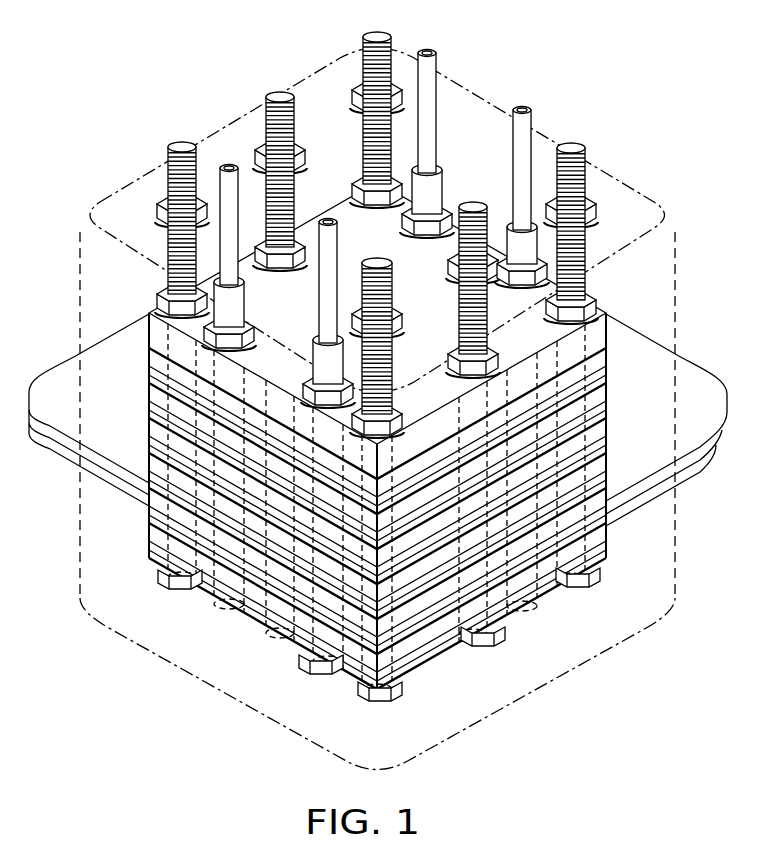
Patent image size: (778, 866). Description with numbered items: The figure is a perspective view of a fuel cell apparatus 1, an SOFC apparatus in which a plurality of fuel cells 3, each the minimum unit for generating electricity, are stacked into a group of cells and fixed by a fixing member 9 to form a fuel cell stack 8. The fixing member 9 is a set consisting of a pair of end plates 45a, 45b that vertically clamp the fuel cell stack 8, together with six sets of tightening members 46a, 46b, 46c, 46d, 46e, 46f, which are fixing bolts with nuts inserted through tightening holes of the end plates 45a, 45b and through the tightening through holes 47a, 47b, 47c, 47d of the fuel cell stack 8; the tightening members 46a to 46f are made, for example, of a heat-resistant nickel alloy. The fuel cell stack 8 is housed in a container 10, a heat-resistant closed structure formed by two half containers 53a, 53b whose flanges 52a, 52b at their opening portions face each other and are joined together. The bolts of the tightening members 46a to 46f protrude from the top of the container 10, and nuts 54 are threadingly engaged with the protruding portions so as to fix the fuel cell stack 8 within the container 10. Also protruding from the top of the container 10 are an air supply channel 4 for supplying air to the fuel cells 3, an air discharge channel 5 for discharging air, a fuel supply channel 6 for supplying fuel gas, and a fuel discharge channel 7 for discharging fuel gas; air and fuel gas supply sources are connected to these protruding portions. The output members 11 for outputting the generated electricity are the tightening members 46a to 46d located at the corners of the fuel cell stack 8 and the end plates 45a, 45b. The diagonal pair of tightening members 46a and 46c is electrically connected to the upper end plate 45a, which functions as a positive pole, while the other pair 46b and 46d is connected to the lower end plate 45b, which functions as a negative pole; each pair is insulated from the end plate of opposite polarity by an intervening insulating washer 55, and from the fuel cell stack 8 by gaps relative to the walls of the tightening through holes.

The fuel cell apparatus 1 is at (576, 68).
The fuel cell 3 is at (158, 371).
The air supply channel 4 is at (436, 58).
The air discharge channel 5 is at (330, 222).
The fuel supply channel 6 is at (534, 114).
The fuel discharge channel 7 is at (230, 168).
The fuel cell stack 8 is at (619, 368).
The fixing member 9 is at (327, 438).
The container 10 is at (97, 538).
The output member 11 is at (314, 96).
The upper end plate 45a is at (157, 336).
The lower end plate 45b is at (524, 600).
The tightening member 46a is at (408, 666).
The tightening member 46b is at (181, 148).
The tightening member 46c is at (376, 40).
The tightening member 46d is at (576, 150).
The tightening member 46e is at (278, 98).
The tightening member 46f is at (473, 206).
The tightening through hole 47a is at (390, 444).
The tightening through hole 47b is at (172, 370).
The tightening through hole 47c is at (435, 123).
The tightening through hole 47d is at (583, 356).
The flange 52a is at (695, 393).
The flange 52b is at (697, 462).
The half container 53a is at (628, 190).
The half container 53b is at (676, 563).
The nut 54 is at (356, 105).
The insulating washer 55 is at (156, 312).